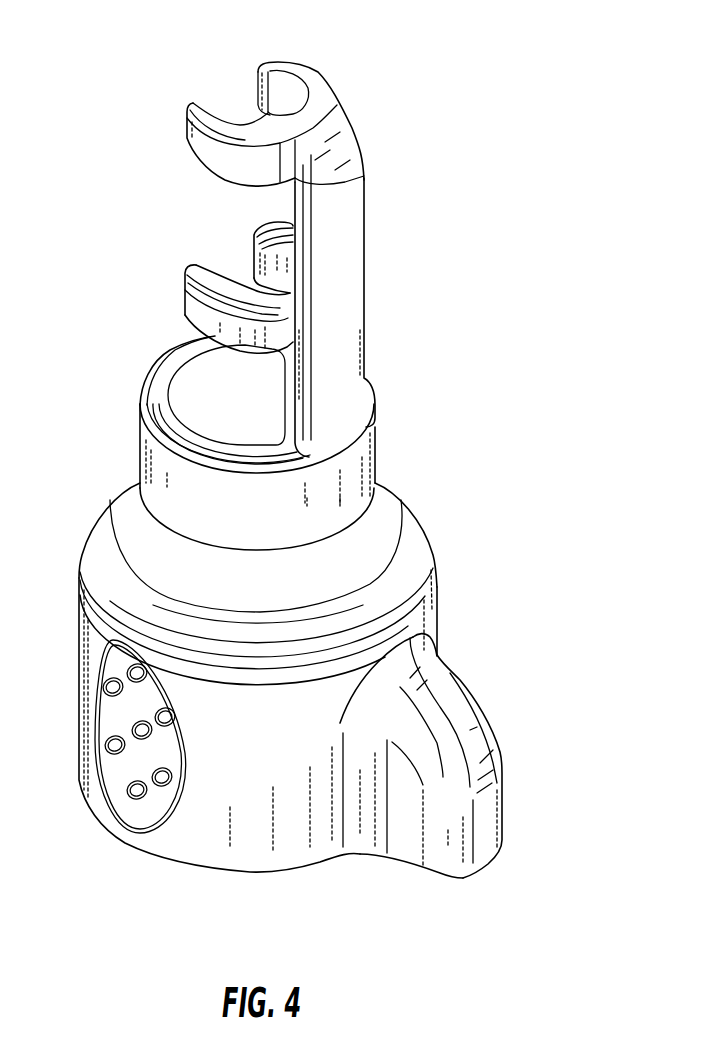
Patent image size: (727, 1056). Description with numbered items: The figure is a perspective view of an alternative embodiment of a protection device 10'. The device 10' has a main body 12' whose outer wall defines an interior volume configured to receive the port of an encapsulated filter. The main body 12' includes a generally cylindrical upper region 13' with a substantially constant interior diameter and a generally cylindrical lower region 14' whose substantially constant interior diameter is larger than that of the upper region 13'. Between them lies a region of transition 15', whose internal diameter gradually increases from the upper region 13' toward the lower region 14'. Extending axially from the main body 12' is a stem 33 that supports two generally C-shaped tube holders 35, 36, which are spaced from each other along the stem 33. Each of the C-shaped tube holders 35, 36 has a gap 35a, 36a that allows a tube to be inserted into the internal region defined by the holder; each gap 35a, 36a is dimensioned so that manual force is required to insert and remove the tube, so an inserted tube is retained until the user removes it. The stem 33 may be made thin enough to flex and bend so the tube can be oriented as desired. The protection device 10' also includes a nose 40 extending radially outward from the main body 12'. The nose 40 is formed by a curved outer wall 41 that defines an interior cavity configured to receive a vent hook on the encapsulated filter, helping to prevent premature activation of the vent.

The protection device 10' is at (308, 483).
The main body 12' is at (325, 627).
The upper region 13' is at (220, 443).
The lower region 14' is at (227, 752).
The region of transition 15' is at (238, 545).
The stem 33 is at (353, 305).
The C-shaped tube holder 35 is at (317, 83).
The gap 35a is at (232, 103).
The C-shaped tube holder 36 is at (183, 297).
The gap 36a is at (233, 263).
The nose 40 is at (506, 777).
The curved outer wall 41 is at (437, 795).